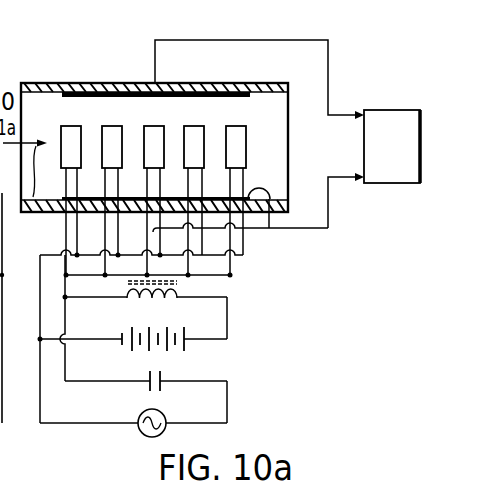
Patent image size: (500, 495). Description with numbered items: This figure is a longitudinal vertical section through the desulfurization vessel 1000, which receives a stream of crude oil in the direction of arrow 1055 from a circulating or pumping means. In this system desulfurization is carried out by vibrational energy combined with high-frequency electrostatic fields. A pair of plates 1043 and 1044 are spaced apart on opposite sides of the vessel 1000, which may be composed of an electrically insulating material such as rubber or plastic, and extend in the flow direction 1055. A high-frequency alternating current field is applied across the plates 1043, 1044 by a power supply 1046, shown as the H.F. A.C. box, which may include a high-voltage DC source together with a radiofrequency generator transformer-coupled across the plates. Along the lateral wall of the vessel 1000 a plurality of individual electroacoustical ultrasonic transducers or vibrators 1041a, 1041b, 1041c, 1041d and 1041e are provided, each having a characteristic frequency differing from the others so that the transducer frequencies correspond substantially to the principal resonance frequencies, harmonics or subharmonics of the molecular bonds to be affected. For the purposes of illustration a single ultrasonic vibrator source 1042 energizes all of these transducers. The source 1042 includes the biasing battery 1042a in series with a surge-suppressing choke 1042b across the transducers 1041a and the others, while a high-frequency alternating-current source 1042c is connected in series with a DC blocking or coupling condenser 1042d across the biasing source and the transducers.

The desulfurization vessel 1000 is at (300, 85).
The electroacoustical ultrasonic transducer 1041a is at (70, 127).
The electroacoustical ultrasonic transducer 1041b is at (110, 127).
The electroacoustical ultrasonic transducer 1041c is at (153, 131).
The electroacoustical ultrasonic transducer 1041d is at (193, 130).
The electroacoustical ultrasonic transducer 1041e is at (244, 130).
The ultrasonic vibrator source 1042 is at (242, 336).
The biasing battery 1042a is at (122, 336).
The surge-suppressing choke 1042b is at (177, 290).
The high-frequency alternating-current source 1042c is at (163, 432).
The DC blocking condenser 1042d is at (163, 380).
The plate 1043 is at (247, 95).
The plate 1044 is at (269, 208).
The power supply 1046 is at (392, 110).
The flow direction arrow 1055 is at (22, 216).